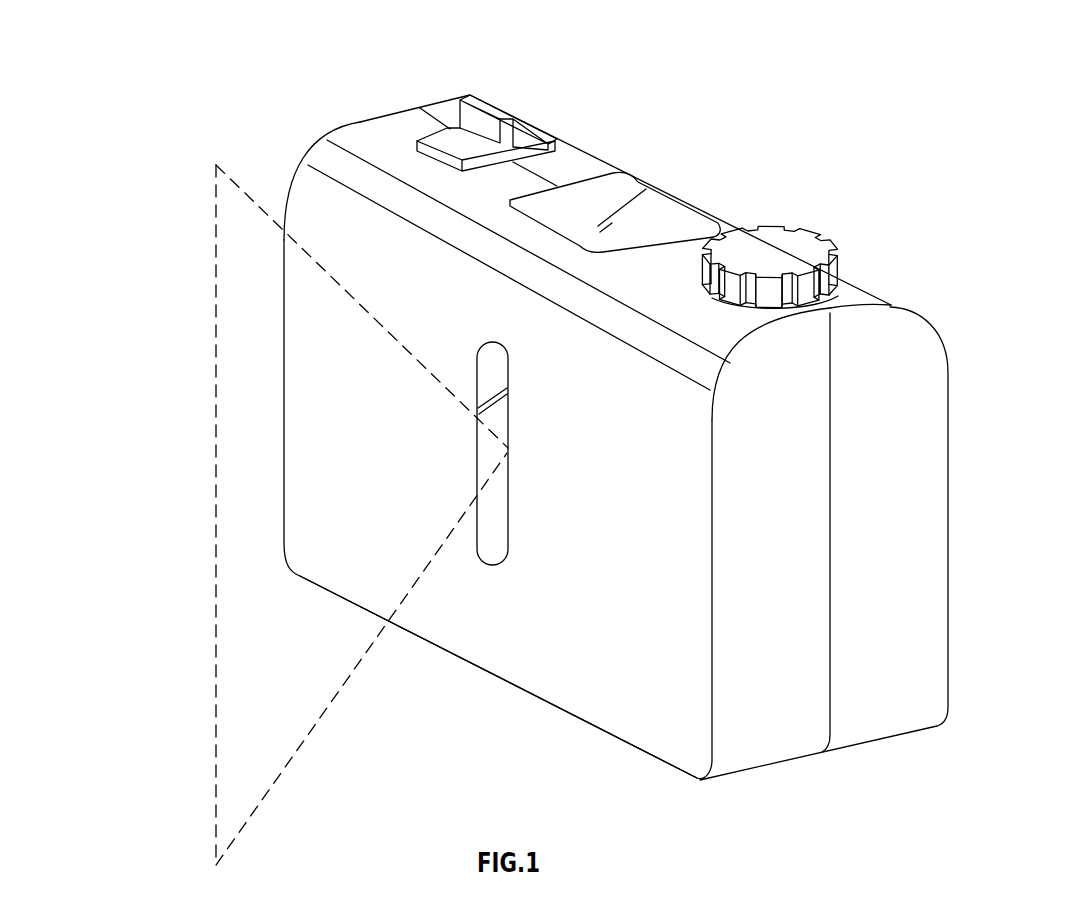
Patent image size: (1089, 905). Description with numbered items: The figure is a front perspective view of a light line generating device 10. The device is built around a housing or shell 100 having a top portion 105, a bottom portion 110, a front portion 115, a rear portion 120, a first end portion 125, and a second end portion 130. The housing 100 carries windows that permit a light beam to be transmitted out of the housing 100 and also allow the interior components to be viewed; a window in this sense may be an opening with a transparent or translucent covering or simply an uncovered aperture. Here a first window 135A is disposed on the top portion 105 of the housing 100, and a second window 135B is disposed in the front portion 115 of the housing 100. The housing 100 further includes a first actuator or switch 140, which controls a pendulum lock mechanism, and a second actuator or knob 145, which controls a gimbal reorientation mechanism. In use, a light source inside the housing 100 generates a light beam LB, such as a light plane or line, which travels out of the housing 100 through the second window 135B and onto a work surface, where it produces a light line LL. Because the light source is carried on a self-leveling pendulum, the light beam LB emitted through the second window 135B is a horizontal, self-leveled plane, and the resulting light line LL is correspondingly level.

The light line generating device 10 is at (985, 153).
The housing 100 is at (962, 408).
The top portion 105 is at (853, 297).
The bottom portion 110 is at (877, 740).
The front portion 115 is at (600, 648).
The rear portion 120 is at (948, 542).
The first end portion 125 is at (287, 182).
The second end portion 130 is at (758, 709).
The first window 135A is at (660, 217).
The second window 135B is at (490, 542).
The first actuator 140 is at (460, 107).
The second actuator 145 is at (780, 252).
The light line LL is at (215, 543).
The light beam LB is at (277, 666).